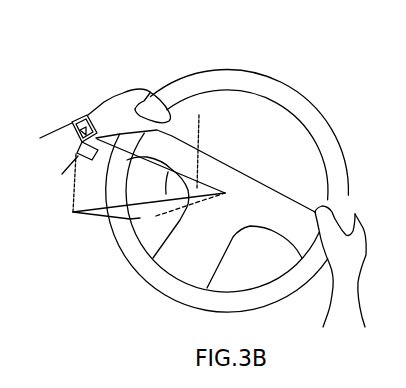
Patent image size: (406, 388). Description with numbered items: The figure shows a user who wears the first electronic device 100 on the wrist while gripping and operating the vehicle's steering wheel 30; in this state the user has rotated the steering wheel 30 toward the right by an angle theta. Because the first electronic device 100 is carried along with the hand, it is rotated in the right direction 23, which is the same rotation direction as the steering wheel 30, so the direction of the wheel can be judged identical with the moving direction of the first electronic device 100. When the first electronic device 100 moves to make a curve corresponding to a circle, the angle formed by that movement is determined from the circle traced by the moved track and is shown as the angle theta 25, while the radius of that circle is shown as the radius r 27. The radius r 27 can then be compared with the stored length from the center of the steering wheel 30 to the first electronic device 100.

The first electronic device 100 is at (80, 117).
The steering wheel 30 is at (283, 88).
The right direction 23 is at (72, 192).
The angle θ 25 is at (199, 115).
The radius r 27 is at (102, 214).